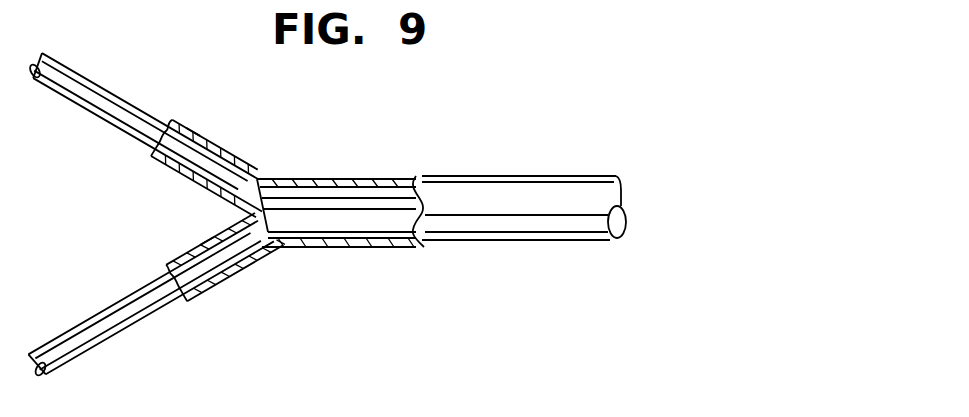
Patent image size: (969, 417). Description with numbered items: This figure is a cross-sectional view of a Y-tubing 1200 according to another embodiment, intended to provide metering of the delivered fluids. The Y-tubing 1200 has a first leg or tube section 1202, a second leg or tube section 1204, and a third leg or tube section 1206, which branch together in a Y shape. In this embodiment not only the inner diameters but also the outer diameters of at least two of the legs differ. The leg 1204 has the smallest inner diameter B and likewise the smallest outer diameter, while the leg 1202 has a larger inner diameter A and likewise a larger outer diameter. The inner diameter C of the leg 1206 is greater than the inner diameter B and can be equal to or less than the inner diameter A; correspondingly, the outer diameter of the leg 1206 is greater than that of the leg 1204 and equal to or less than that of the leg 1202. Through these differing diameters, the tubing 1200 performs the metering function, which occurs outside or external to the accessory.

The Y-tubing 1200 is at (438, 250).
The first leg or tube section 1202 is at (540, 184).
The second leg or tube section 1204 is at (76, 80).
The third leg or tube section 1206 is at (128, 322).
The inner diameter of leg 1202 A is at (358, 255).
The inner diameter of leg 1204 B is at (176, 176).
The inner diameter of leg 1206 C is at (188, 243).